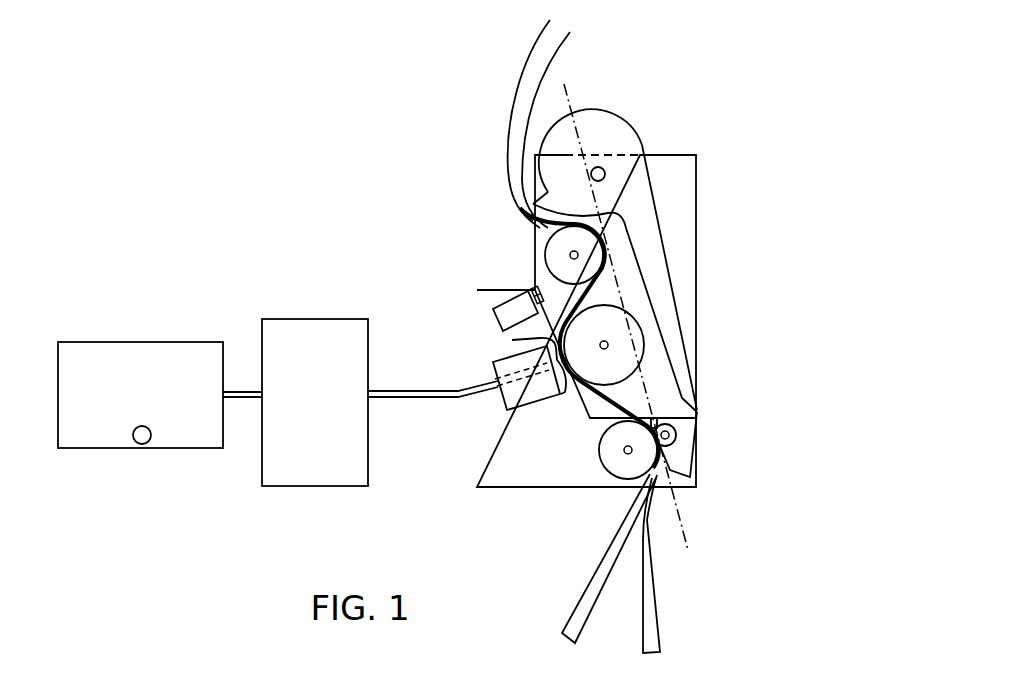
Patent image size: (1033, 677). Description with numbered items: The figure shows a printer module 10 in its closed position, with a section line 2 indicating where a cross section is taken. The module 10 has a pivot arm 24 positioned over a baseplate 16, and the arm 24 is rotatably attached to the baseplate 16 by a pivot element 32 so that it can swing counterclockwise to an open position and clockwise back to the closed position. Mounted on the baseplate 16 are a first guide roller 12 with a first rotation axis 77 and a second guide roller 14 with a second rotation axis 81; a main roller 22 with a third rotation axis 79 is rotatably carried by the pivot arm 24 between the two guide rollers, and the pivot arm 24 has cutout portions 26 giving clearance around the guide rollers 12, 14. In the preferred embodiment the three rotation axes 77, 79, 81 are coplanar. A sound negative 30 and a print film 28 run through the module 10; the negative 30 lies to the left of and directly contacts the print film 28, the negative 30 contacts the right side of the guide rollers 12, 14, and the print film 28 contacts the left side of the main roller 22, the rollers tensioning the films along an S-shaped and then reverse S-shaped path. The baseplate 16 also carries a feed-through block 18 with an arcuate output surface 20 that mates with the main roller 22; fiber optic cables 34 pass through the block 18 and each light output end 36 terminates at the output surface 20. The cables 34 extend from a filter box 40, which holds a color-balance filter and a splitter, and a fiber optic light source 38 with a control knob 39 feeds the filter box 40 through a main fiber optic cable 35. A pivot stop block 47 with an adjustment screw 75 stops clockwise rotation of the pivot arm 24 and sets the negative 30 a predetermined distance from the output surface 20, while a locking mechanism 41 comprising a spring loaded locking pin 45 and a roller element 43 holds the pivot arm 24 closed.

The printer module 10 is at (437, 73).
The first guide roller 12 is at (618, 478).
The second guide roller 14 is at (572, 253).
The baseplate 16 is at (697, 165).
The feed-through block 18 is at (513, 408).
The output surface 20 is at (512, 340).
The main roller 22 is at (637, 325).
The pivot arm 24 is at (660, 267).
The cutout portions 26 is at (535, 278).
The print film 28 is at (566, 40).
The sound negative 30 is at (535, 33).
The pivot element 32 is at (603, 168).
The fiber optic cables 34 is at (426, 400).
The main fiber optic cable 35 is at (240, 388).
The light output end 36 is at (558, 396).
The fiber optic light source 38 is at (122, 345).
The control knob 39 is at (146, 444).
The filter box 40 is at (297, 487).
The locking mechanism 41 is at (682, 432).
The roller element 43 is at (671, 447).
The spring loaded locking pin 45 is at (653, 416).
The pivot stop block 47 is at (497, 313).
The adjustment screw 75 is at (530, 287).
The first rotation axis 77 is at (531, 233).
The third rotation axis 79 is at (608, 346).
The second rotation axis 81 is at (625, 452).
The section line 2- 2 is at (564, 84).